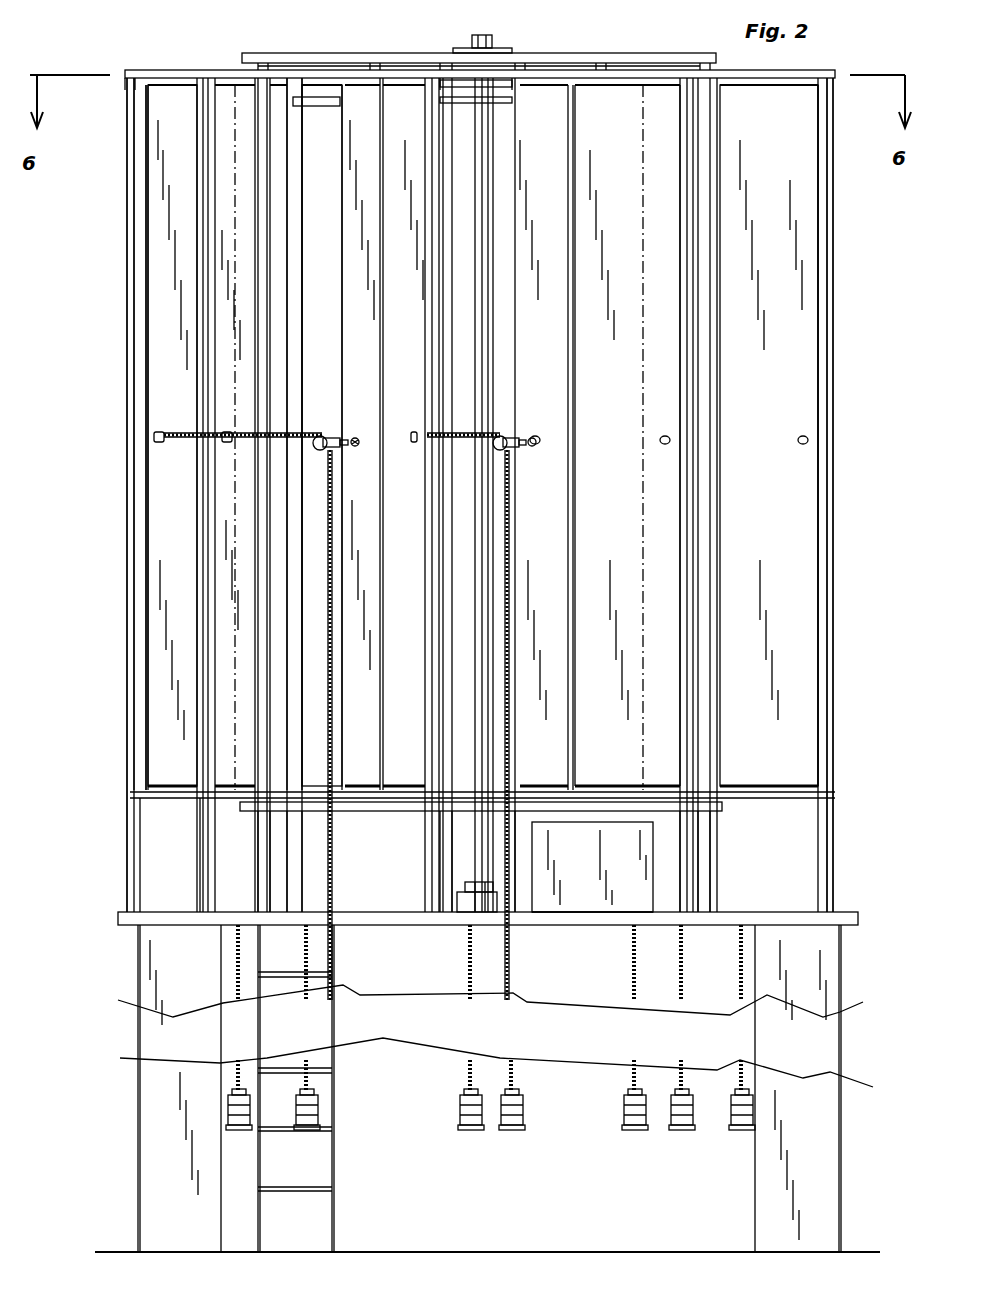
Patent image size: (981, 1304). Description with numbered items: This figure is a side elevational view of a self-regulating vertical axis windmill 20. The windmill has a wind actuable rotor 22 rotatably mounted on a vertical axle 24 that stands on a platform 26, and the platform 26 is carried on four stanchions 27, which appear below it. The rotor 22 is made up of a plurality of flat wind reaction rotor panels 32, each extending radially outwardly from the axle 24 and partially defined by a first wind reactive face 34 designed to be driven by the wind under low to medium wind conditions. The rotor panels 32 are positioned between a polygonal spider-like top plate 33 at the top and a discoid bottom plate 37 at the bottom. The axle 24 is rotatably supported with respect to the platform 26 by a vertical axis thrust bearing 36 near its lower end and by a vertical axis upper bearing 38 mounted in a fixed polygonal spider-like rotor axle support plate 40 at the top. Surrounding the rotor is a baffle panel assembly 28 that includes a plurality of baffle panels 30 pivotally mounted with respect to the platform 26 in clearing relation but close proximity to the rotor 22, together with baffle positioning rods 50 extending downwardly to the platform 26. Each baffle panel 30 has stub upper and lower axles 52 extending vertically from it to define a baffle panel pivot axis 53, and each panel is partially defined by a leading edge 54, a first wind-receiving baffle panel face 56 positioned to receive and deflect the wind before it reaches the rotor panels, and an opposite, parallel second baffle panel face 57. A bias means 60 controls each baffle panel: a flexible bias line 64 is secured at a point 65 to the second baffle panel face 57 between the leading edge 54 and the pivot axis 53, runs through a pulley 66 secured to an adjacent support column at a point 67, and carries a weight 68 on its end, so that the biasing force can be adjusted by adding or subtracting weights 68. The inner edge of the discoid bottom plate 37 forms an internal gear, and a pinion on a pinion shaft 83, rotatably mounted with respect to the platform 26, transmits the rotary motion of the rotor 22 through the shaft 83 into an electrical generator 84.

The self-regulating vertical axis windmill 20 is at (682, 43).
The wind actuable rotor 22 is at (316, 141).
The vertical axle 24 is at (482, 130).
The platform 26 is at (843, 916).
The stanchion 27 is at (166, 1137).
The baffle panel assembly 28 is at (112, 191).
The baffle panel 30 is at (245, 358).
The wind reaction rotor panel 32 is at (320, 548).
The polygonal spider-like top plate 33 is at (310, 98).
The first wind reactive face 34 is at (316, 303).
The vertical axis thrust bearing 36 is at (466, 897).
The discoid bottom plate 37 is at (716, 809).
The vertical axis upper bearing 38 is at (498, 50).
The rotor axle support plate 40 is at (615, 54).
The baffle positioning rod 50 is at (132, 461).
The stub axle 52 is at (640, 80).
The baffle panel pivot axis 53 is at (642, 514).
The leading edge 54 is at (145, 246).
The first wind-receiving baffle panel face 56 is at (810, 512).
The second baffle panel face 57 is at (160, 506).
The bias means 60 is at (518, 432).
The flexible bias line 64 is at (512, 482).
The line securing point 65 is at (160, 432).
The pulley 66 is at (316, 438).
The pulley securing point 67 is at (346, 448).
The weight 68 is at (505, 1133).
The pinion shaft 83 is at (596, 820).
The electrical generator 84 is at (600, 895).